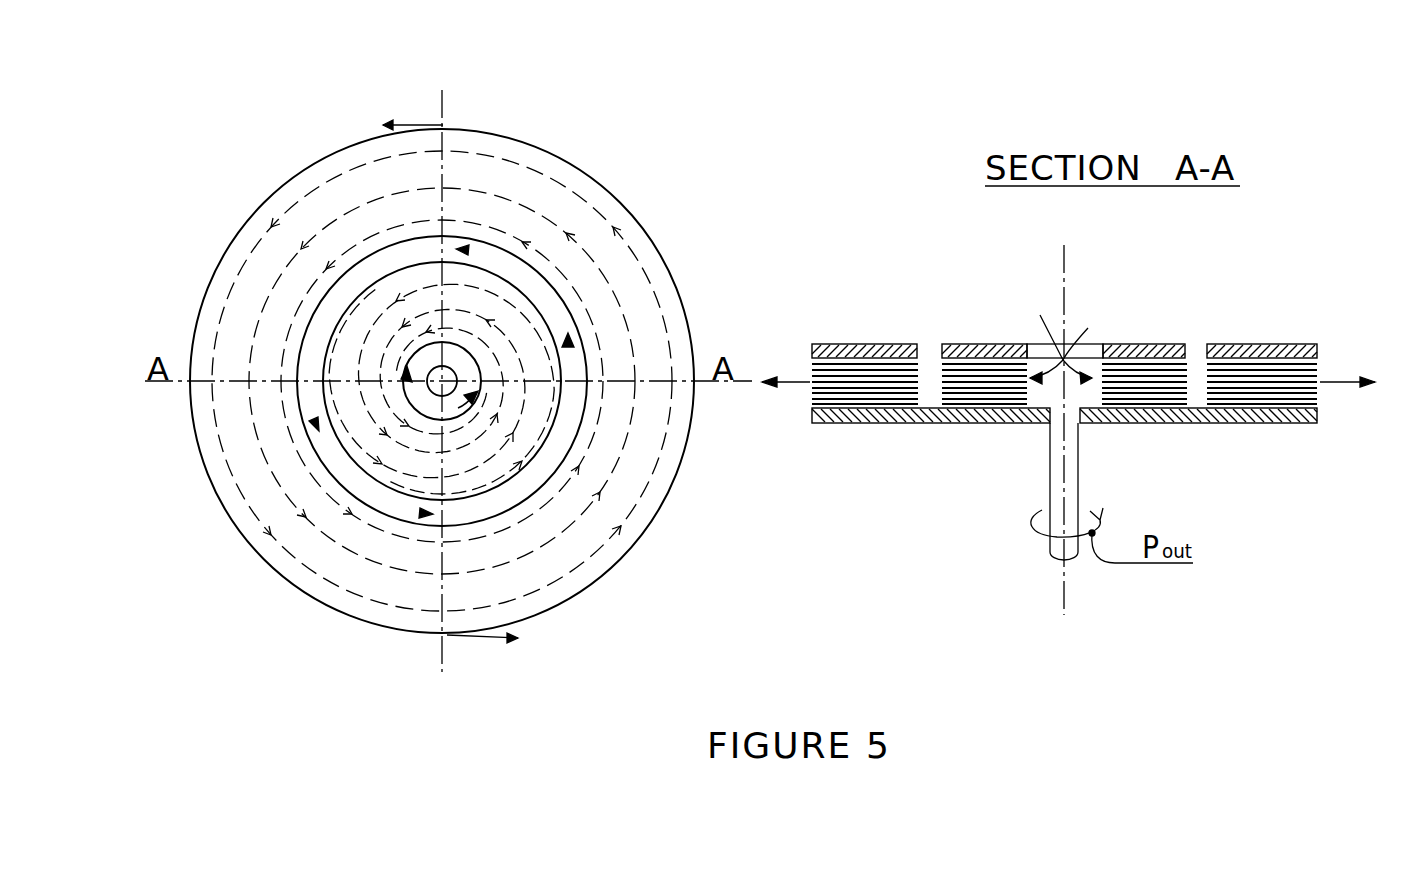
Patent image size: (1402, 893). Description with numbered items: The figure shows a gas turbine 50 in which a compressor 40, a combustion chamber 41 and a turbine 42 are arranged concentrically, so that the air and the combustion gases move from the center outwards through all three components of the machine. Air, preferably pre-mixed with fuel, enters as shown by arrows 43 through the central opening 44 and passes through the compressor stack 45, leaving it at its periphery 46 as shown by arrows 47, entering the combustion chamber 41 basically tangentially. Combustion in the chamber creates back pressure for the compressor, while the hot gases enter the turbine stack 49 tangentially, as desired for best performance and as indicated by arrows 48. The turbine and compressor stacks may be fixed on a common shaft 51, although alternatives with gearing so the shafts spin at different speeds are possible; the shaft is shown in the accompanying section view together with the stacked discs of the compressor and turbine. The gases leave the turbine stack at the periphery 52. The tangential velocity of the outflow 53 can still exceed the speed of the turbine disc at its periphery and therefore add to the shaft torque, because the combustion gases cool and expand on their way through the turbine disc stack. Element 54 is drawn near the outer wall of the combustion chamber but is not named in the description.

The compressor 40 is at (475, 250).
The combustion chamber 41 is at (522, 283).
The turbine 42 is at (380, 158).
The arrows 43 is at (1088, 330).
The central opening 44 is at (472, 357).
The compressor stack 45 is at (1142, 380).
The periphery 46 is at (533, 460).
The arrows 47 is at (570, 365).
The arrows 48 is at (463, 283).
The turbine stack 49 is at (1255, 383).
The gas turbine 50 is at (257, 110).
The common shaft 51 is at (435, 377).
The periphery 52 is at (549, 608).
The outflow 53 is at (477, 637).
The outer ring wall 54 is at (367, 507).